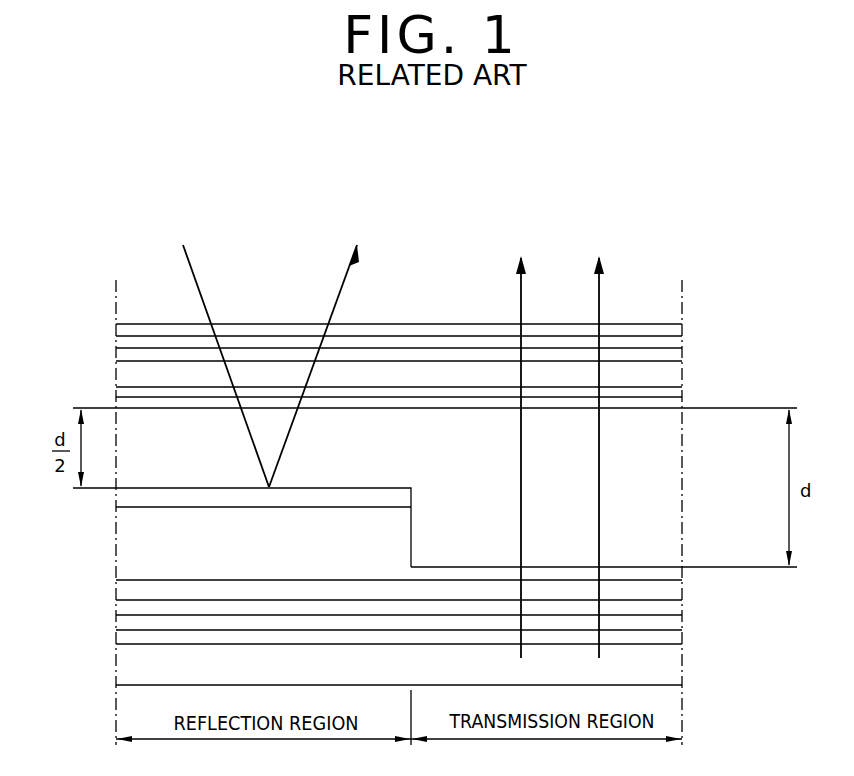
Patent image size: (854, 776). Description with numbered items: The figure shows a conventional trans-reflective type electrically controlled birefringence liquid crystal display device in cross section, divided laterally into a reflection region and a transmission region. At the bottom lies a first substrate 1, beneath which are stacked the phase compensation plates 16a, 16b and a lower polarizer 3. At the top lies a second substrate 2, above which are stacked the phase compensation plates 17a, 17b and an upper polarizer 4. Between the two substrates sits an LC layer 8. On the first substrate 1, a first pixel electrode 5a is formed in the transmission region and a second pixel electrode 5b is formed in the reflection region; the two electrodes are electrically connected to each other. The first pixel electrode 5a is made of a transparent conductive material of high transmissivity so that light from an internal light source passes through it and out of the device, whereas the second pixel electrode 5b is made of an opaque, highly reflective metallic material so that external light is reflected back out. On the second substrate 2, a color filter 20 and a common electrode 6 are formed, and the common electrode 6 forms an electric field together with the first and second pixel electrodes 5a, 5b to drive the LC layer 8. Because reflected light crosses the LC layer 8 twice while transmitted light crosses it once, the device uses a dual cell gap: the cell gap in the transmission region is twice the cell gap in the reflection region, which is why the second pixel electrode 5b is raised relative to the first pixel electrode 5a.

The upper polarizer 4 is at (680, 328).
The phase compensation plate 17b is at (676, 340).
The phase compensation plate 17a is at (676, 352).
The second substrate 2 is at (678, 373).
The color filter 20 is at (678, 391).
The common electrode 6 is at (676, 406).
The LC layer 8 is at (672, 501).
The second pixel electrode 5b is at (128, 497).
The first pixel electrode 5a is at (672, 571).
The first substrate 1 is at (672, 593).
The phase compensation plate 16a is at (672, 610).
The phase compensation plate 16b is at (672, 625).
The lower polarizer 3 is at (672, 640).